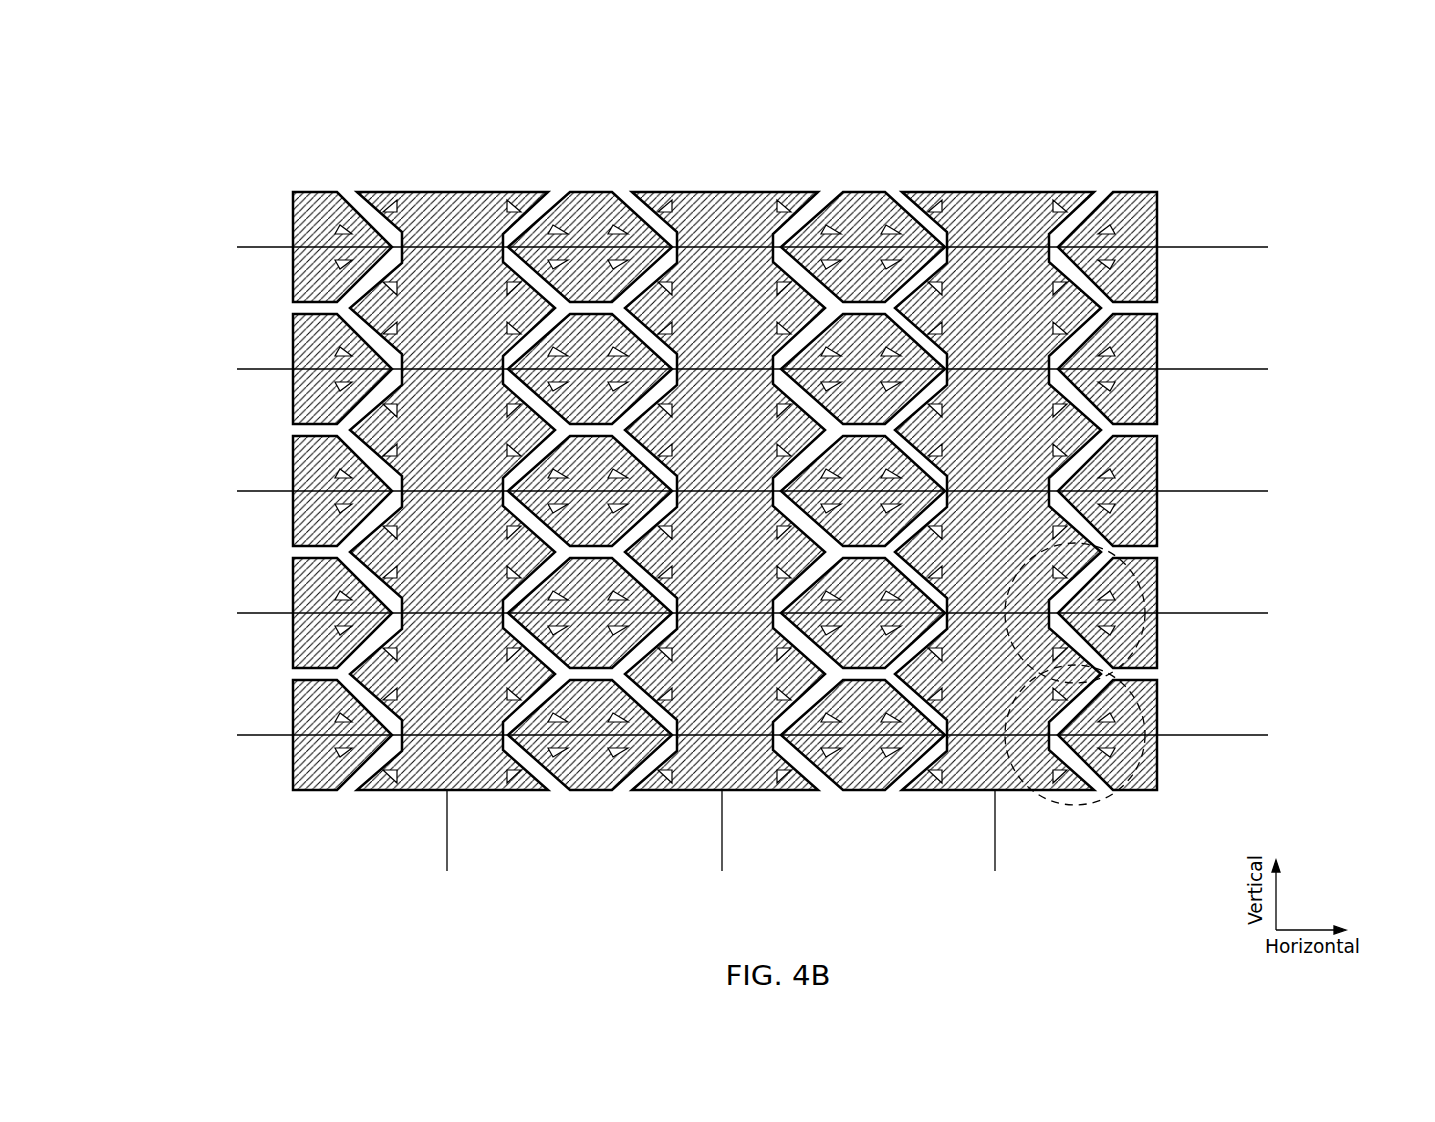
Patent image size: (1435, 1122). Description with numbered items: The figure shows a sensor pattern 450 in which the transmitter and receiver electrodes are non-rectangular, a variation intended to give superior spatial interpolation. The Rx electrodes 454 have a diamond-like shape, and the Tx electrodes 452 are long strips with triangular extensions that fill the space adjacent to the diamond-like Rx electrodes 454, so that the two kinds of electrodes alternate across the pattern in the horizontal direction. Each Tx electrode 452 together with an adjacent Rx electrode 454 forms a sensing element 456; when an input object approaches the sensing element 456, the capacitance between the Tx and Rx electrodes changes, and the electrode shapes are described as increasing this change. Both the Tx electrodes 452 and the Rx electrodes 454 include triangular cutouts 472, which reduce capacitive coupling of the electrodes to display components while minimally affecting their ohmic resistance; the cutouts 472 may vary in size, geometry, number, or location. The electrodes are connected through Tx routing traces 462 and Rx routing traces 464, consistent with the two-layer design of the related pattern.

The sensor pattern 450 is at (753, 482).
The Tx electrodes 452 is at (710, 208).
The Rx electrodes 454 is at (632, 491).
The sensing element 456 is at (1148, 725).
The Tx routing traces 462 is at (722, 826).
The Rx routing traces 464 is at (250, 491).
The cutouts 472 is at (930, 742).